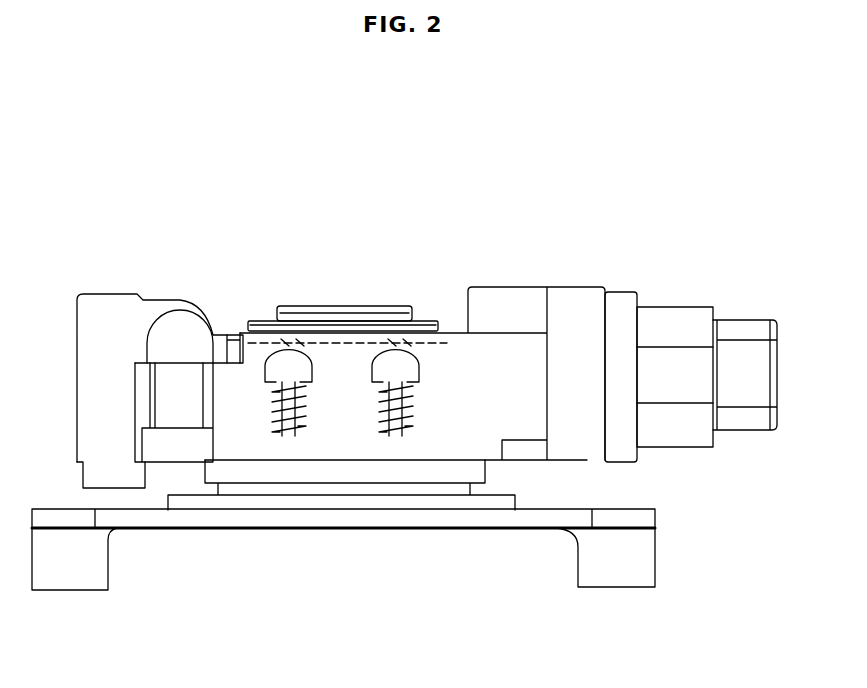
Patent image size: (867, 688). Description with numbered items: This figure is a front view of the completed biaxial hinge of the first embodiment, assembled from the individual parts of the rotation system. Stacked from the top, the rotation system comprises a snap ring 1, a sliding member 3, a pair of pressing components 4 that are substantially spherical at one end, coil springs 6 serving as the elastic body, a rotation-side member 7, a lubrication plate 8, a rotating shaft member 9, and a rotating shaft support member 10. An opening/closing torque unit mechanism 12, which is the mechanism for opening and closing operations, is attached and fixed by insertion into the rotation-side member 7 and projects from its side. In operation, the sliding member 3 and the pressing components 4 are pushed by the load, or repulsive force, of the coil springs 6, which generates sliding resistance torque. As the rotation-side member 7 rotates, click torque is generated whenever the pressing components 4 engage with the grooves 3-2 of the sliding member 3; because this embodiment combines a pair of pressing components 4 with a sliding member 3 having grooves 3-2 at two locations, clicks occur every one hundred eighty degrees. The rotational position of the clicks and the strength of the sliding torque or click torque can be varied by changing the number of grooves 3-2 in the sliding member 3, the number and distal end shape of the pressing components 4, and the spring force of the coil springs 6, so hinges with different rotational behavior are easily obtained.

The snap ring 1 is at (320, 323).
The sliding member 3 is at (445, 333).
The grooves 3-2 is at (285, 341).
The pressing components 4 is at (282, 370).
The coil springs 6 is at (415, 417).
The rotation-side member 7 is at (233, 412).
The lubrication plate 8 is at (338, 490).
The rotating shaft member 9 is at (362, 305).
The rotating shaft support member 10 is at (612, 562).
The opening/closing torque unit mechanism 12 is at (679, 325).